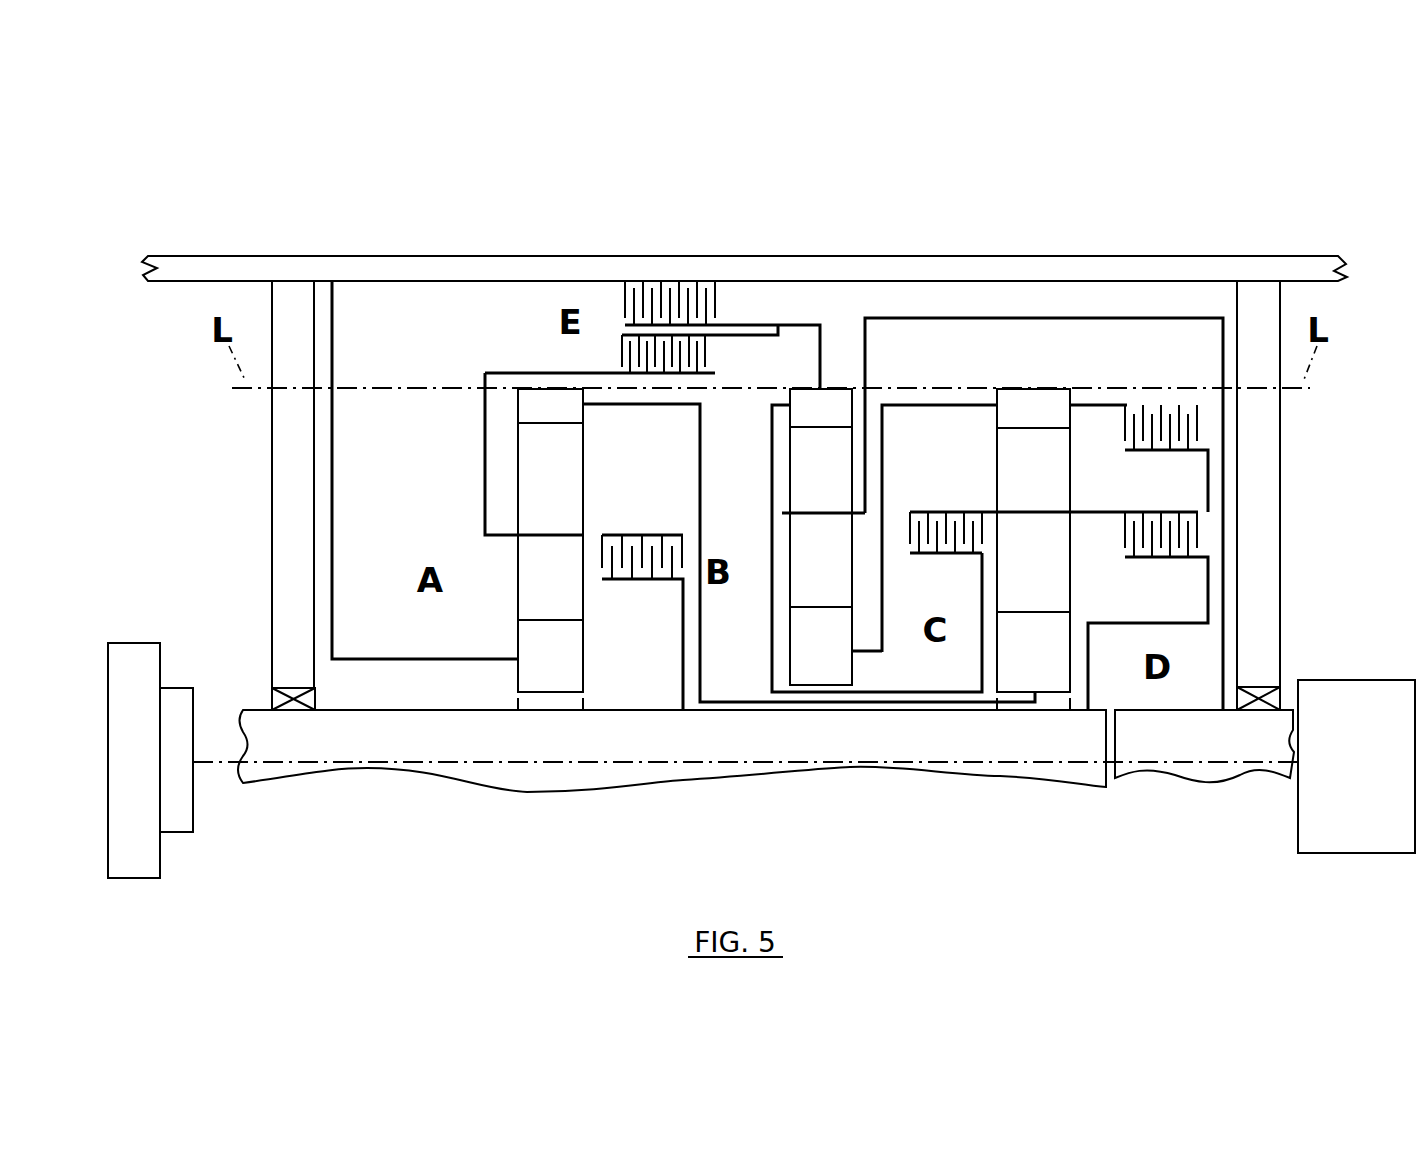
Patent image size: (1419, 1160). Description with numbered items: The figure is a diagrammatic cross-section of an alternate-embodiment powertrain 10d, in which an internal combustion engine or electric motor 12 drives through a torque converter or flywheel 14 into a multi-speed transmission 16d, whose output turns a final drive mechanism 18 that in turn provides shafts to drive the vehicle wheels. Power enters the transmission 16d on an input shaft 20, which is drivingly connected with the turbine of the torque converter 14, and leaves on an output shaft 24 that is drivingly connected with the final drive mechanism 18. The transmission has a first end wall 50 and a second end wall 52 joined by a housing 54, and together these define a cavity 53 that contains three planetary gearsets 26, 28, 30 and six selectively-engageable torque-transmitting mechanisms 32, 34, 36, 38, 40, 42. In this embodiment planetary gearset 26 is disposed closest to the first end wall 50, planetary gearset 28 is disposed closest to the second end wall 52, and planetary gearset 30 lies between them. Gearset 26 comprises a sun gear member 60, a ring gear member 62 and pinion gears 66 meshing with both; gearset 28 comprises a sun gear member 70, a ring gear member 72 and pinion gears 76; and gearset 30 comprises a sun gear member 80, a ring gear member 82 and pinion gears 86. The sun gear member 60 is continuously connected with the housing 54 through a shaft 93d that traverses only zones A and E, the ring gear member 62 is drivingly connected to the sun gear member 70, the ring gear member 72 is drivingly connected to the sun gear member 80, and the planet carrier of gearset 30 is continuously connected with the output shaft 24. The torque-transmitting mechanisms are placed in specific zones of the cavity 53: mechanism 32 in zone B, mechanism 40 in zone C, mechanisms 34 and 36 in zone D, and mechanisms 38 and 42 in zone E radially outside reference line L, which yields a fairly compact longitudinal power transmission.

The powertrain 10d is at (334, 193).
The internal combustion engine or electric motor 12 is at (121, 743).
The torque converter or flywheel 14 is at (165, 743).
The transmission 16d is at (1304, 430).
The final drive mechanism 18 is at (1298, 830).
The input shaft 20 is at (530, 795).
The output shaft 24 is at (1185, 780).
The planetary gearset 26 is at (558, 704).
The planetary gearset 28 is at (1048, 708).
The planetary gearset 30 is at (814, 704).
The torque-transmitting mechanism 32 is at (605, 582).
The torque-transmitting mechanism 34 is at (1136, 398).
The torque-transmitting mechanism 36 is at (1125, 558).
The torque-transmitting mechanism 38 is at (703, 377).
The torque-transmitting mechanism 40 is at (913, 555).
The torque-transmitting mechanism 42 is at (672, 280).
The first end wall 50 is at (272, 306).
The second end wall 52 is at (1282, 503).
The cavity 53 is at (1168, 300).
The housing 54 is at (1053, 255).
The sun gear member 60 is at (533, 672).
The ring gear member 62 is at (552, 402).
The pinion gears 66 is at (533, 593).
The sun gear member 70 is at (1019, 665).
The ring gear member 72 is at (1019, 423).
The pinion gears 76 is at (1019, 578).
The sun gear member 80 is at (806, 665).
The ring gear member 82 is at (806, 423).
The pinion gears 86 is at (806, 578).
The shaft 93d is at (337, 313).